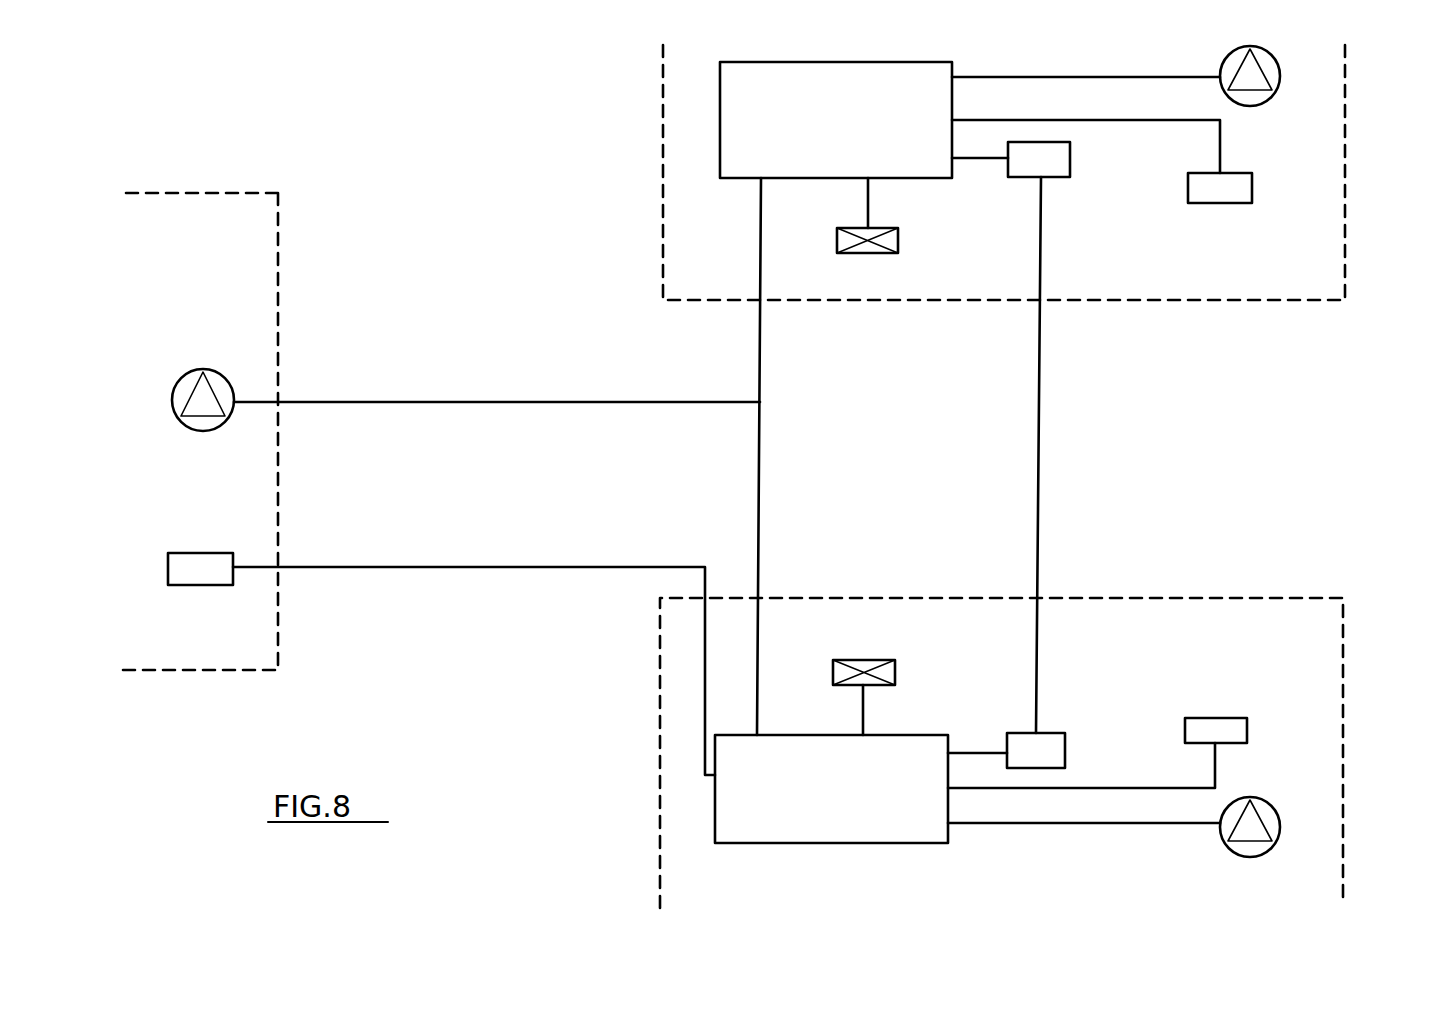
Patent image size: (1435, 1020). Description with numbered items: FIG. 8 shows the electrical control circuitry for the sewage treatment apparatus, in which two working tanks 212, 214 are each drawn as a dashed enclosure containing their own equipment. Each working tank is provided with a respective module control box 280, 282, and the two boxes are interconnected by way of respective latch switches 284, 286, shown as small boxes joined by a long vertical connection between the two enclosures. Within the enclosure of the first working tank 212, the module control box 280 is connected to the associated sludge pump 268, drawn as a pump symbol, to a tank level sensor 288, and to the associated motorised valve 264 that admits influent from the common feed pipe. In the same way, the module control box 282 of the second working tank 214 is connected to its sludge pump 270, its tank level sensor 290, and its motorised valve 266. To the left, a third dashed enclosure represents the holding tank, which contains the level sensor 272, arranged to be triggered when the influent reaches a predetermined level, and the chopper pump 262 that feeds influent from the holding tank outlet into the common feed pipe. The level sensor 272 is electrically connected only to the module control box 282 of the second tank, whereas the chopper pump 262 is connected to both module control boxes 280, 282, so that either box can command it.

The working tank 212 is at (1325, 143).
The working tank 214 is at (1330, 749).
The chopper pump 262 is at (213, 386).
The motorised shut-off valve 264 is at (893, 242).
The motorised shut-off valve 266 is at (890, 672).
The sludge pump 268 is at (1262, 82).
The sludge pump 270 is at (1265, 831).
The level sensor 272 is at (207, 566).
The module control box 280 is at (735, 122).
The module control box 282 is at (730, 797).
The latch switch 284 is at (1070, 158).
The latch switch 286 is at (1060, 751).
The tank level sensor 288 is at (1245, 190).
The tank level sensor 290 is at (1240, 731).